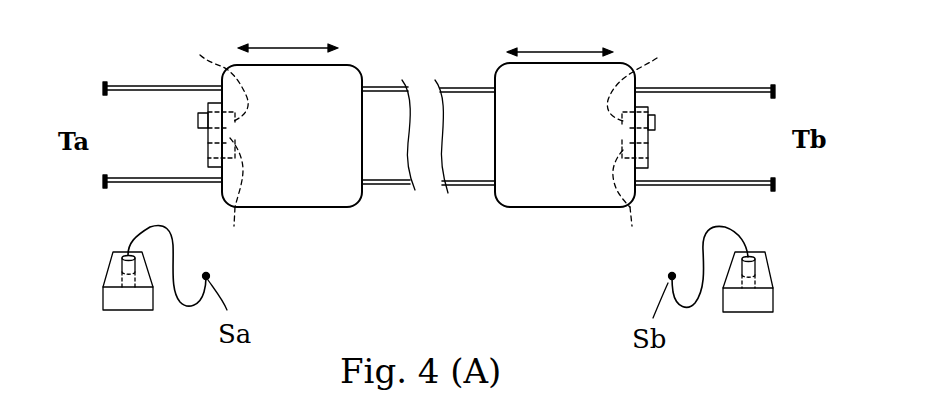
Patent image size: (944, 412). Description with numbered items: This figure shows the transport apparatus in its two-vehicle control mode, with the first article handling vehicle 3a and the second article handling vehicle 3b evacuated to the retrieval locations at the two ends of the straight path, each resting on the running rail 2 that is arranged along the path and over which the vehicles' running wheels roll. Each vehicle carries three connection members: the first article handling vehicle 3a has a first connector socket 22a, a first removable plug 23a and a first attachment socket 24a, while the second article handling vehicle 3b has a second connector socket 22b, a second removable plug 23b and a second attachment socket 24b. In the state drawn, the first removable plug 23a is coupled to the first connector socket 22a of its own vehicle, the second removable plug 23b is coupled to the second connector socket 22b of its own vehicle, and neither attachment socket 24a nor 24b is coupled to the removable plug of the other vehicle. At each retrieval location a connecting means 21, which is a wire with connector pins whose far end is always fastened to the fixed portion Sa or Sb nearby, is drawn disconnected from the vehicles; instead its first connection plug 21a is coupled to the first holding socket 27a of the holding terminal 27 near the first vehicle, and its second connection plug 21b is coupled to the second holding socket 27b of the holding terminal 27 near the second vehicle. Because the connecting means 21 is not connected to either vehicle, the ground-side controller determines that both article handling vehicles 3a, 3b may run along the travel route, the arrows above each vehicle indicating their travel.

The running rail 2 is at (467, 92).
The first article handling vehicle 3a is at (355, 78).
The second article handling vehicle 3b is at (501, 78).
The connecting means 21 is at (224, 261).
The first connection plug 21a is at (125, 266).
The second connection plug 21b is at (750, 262).
The first connector socket 22a is at (207, 120).
The second connector socket 22b is at (651, 121).
The first removable plug 23a is at (198, 120).
The second removable plug 23b is at (655, 122).
The first attachment socket 24a is at (242, 227).
The second attachment socket 24b is at (627, 227).
The holding terminal 27 is at (137, 303).
The first holding socket 27a is at (116, 266).
The second holding socket 27b is at (757, 268).